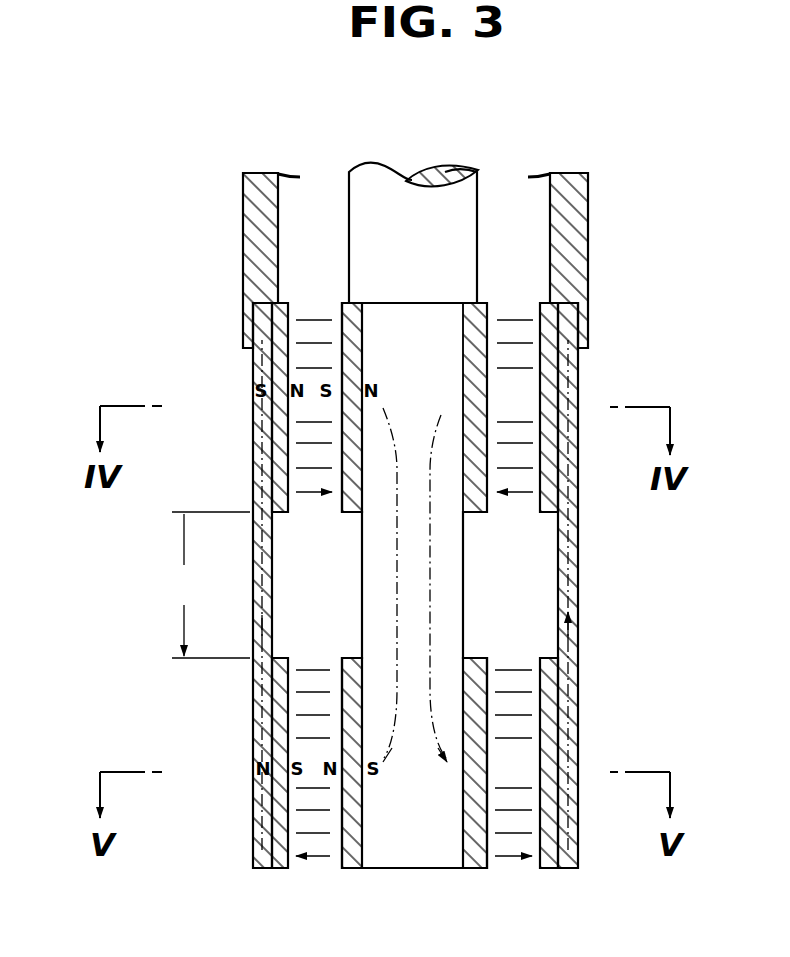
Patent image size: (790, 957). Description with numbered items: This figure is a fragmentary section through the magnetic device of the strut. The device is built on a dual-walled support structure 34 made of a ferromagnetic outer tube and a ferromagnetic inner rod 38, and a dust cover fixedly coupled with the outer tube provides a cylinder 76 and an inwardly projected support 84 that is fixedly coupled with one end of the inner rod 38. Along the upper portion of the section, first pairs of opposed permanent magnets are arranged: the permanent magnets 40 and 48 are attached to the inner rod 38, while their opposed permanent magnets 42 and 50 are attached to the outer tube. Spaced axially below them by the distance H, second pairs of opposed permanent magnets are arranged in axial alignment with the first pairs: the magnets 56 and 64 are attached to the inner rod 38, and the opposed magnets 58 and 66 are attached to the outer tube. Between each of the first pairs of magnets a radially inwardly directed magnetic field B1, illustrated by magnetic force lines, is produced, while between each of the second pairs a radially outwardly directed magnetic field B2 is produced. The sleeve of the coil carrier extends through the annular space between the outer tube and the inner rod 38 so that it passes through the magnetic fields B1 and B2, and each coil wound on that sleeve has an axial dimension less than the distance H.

The inwardly projected support 84 is at (490, 207).
The cylinder 76 is at (578, 228).
The dual-walled support structure 34 is at (578, 525).
The permanent magnet 40 is at (476, 312).
The inner rod 38 is at (450, 605).
The permanent magnet 48 is at (362, 357).
The permanent magnet 50 is at (262, 372).
The permanent magnet 42 is at (548, 363).
The permanent magnet 64 is at (360, 812).
The permanent magnet 56 is at (470, 845).
The permanent magnet 66 is at (280, 797).
The permanent magnet 58 is at (548, 788).
The radially inwardly directed magnetic field B1 is at (302, 318).
The radially outwardly directed magnetic field B2 is at (330, 857).
The distance H is at (211, 585).